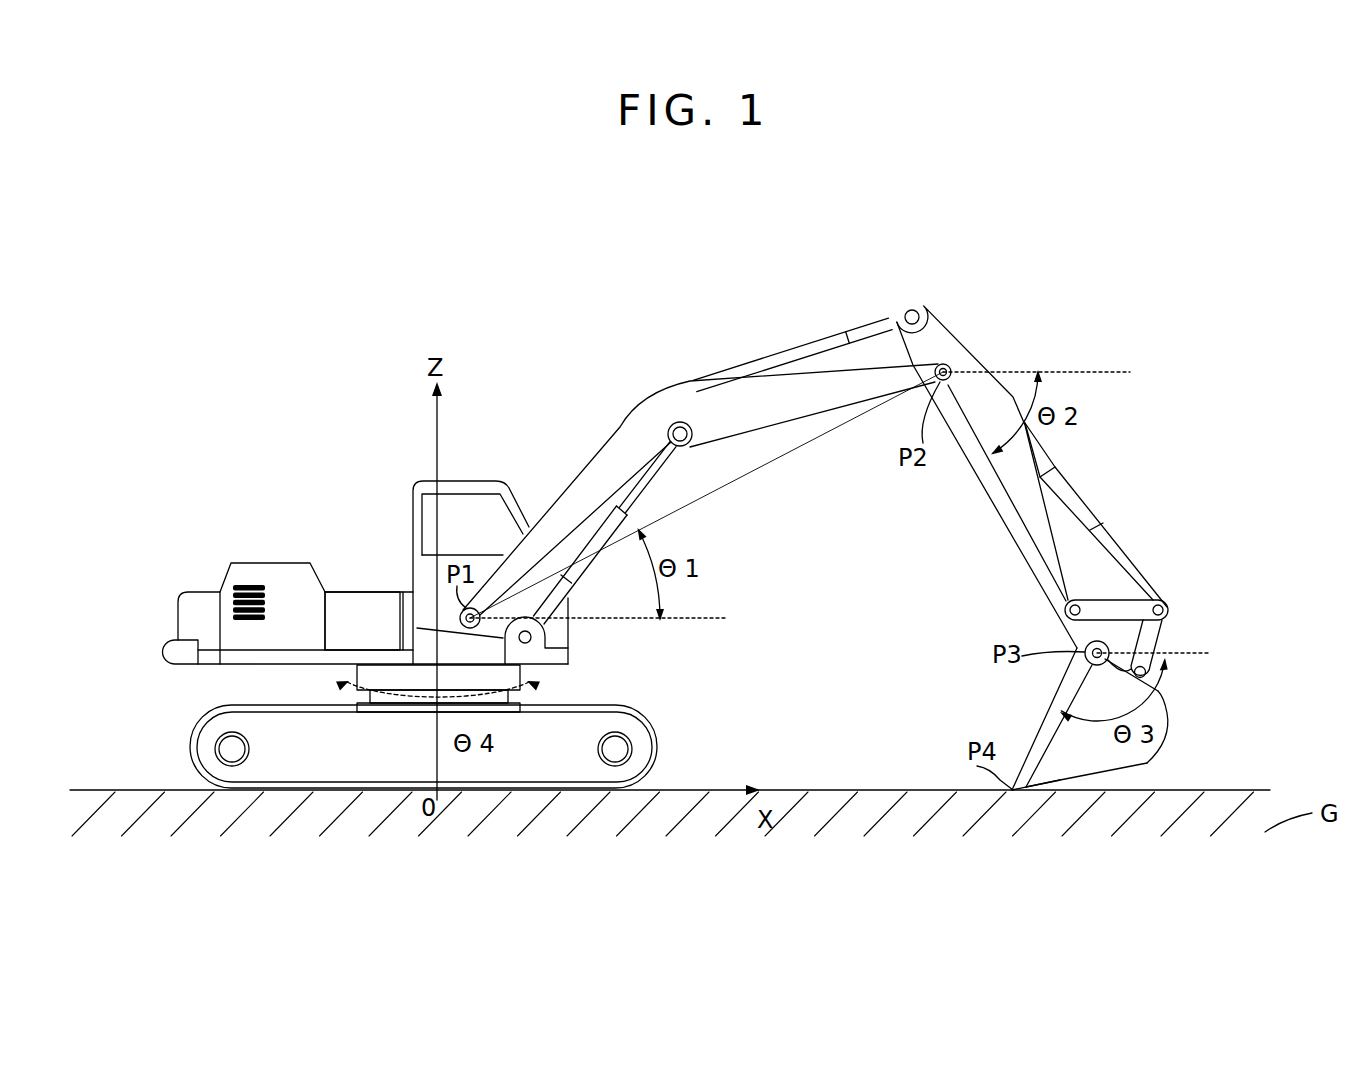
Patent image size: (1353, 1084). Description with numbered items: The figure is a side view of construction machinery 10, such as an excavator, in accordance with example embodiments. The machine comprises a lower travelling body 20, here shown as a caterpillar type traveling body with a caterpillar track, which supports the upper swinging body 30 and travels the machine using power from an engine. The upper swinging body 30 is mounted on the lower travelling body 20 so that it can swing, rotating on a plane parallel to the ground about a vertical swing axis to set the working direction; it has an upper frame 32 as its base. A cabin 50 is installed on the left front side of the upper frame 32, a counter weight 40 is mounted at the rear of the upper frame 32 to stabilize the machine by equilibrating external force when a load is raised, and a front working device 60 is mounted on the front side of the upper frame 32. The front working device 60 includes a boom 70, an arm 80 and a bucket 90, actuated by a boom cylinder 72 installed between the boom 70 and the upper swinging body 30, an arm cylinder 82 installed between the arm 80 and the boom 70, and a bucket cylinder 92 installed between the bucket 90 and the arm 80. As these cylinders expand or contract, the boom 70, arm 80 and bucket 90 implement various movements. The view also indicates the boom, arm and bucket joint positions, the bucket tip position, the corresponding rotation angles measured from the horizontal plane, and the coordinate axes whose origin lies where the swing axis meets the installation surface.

The construction machinery 10 is at (626, 228).
The lower travelling body 20 is at (305, 793).
The upper swinging body 30 is at (158, 600).
The upper frame 32 is at (290, 653).
The counter weight 40 is at (195, 592).
The cabin 50 is at (468, 480).
The front working device 60 is at (744, 317).
The boom 70 is at (637, 403).
The boom cylinder 72 is at (572, 580).
The arm 80 is at (977, 360).
The arm cylinder 82 is at (823, 347).
The bucket 90 is at (1168, 727).
The bucket cylinder 92 is at (1137, 565).